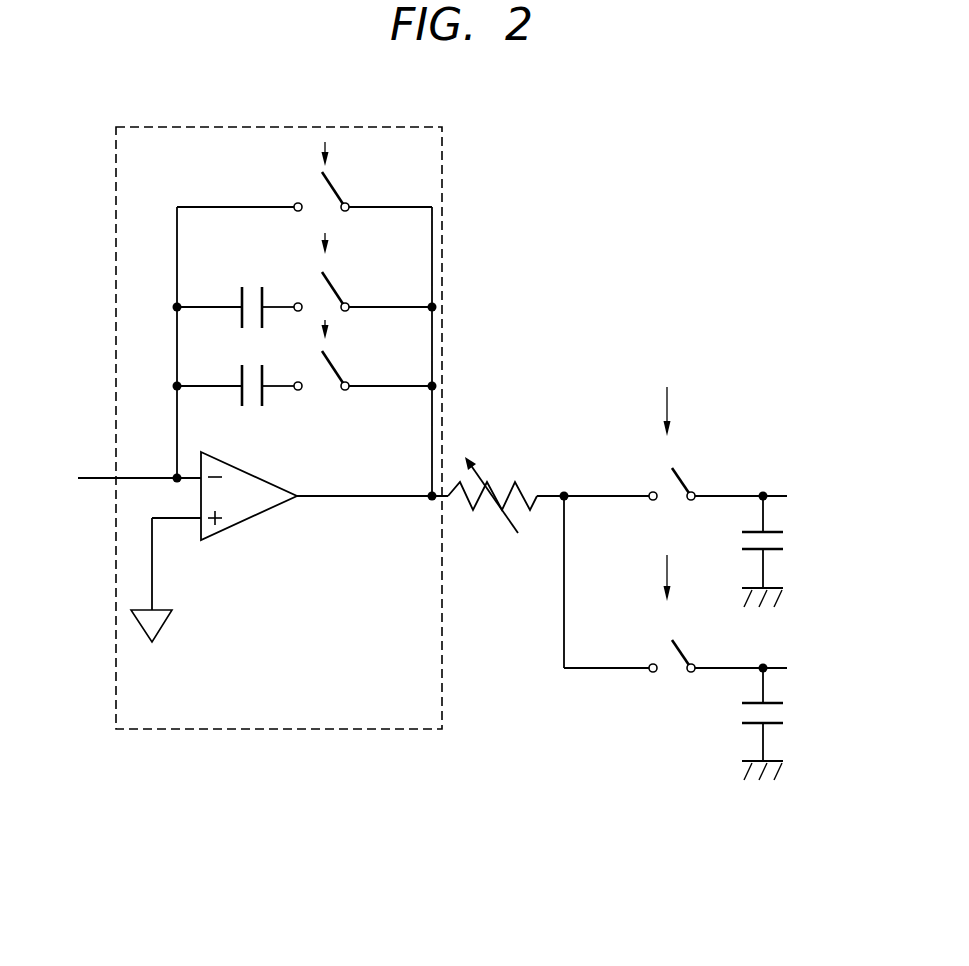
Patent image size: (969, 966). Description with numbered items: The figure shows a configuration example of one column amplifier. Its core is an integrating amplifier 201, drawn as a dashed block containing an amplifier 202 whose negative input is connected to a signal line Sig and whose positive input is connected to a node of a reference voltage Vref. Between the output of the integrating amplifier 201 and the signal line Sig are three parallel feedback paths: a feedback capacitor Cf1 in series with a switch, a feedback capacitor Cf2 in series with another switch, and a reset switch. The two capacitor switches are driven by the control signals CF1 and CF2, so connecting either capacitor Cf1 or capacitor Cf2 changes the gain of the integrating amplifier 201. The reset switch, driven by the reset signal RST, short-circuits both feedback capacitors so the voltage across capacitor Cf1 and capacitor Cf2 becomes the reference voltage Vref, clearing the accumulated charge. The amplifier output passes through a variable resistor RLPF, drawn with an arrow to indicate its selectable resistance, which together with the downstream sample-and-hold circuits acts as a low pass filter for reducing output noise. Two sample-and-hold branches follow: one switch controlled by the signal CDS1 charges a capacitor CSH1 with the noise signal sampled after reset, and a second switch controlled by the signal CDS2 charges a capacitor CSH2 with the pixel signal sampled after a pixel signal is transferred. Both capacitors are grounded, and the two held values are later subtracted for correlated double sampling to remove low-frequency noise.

The integrating amplifier 201 is at (358, 729).
The operational amplifier 202 is at (248, 520).
The reset control signal RST is at (328, 146).
The feedback capacitor Cf2 is at (251, 289).
The control signal CF2 is at (328, 237).
The feedback capacitor Cf1 is at (250, 408).
The control signal CF1 is at (328, 324).
The signal line Sig is at (129, 465).
The reference voltage Vref is at (166, 595).
The resistor RLPF is at (492, 508).
The control signal CDS1 is at (667, 400).
The control signal CDS2 is at (667, 565).
The capacitor CSH1 is at (783, 540).
The capacitor CSH2 is at (783, 715).